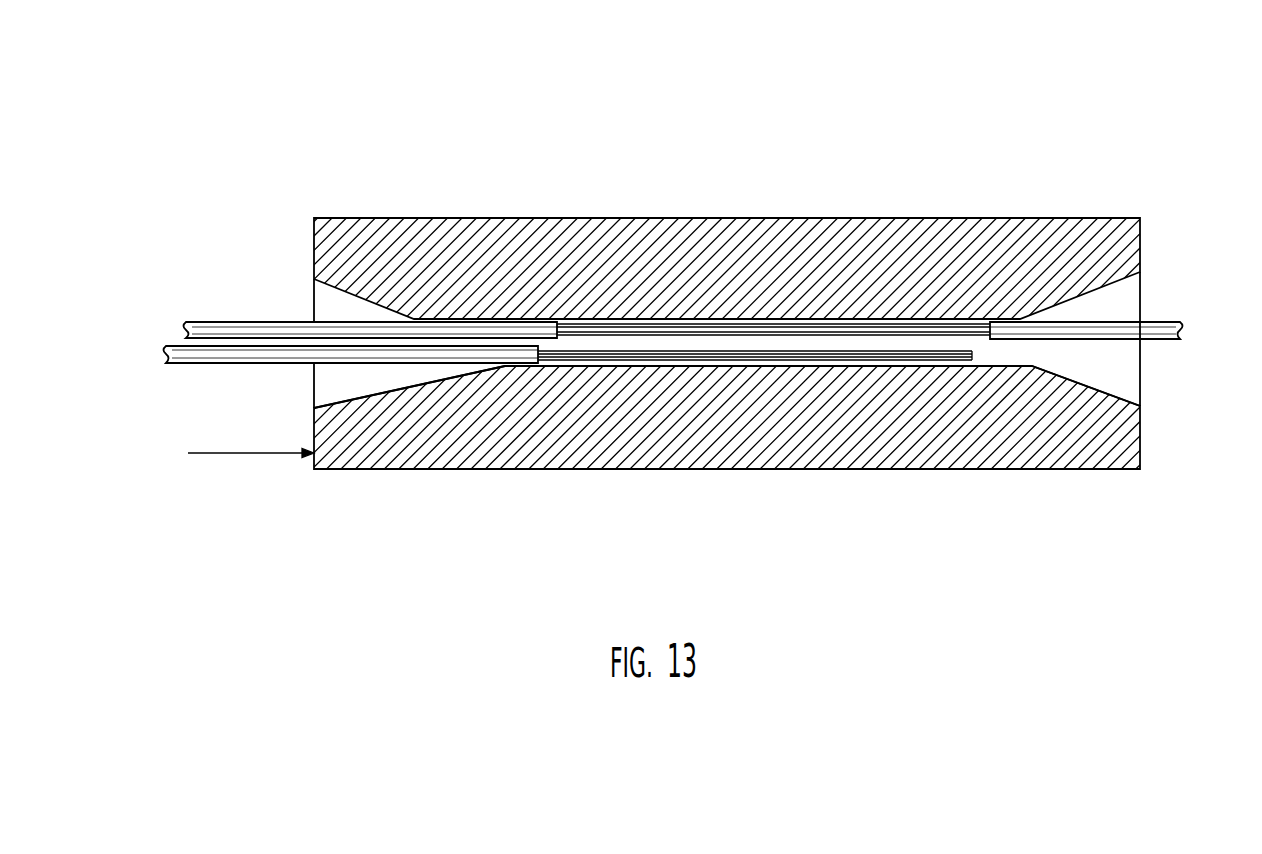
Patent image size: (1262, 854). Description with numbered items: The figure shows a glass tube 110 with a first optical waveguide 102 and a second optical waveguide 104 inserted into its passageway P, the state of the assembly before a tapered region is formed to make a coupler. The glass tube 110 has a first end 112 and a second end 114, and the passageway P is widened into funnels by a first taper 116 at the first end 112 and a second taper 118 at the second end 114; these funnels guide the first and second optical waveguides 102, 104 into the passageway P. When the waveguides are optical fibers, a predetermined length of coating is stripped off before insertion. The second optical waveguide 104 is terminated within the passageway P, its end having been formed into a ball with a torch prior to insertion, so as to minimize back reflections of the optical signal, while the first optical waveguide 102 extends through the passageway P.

The first optical waveguide 102 is at (1150, 325).
The second optical waveguide 104 is at (1004, 355).
The glass tube 110 is at (665, 318).
The first end 112 is at (1156, 476).
The second end 114 is at (245, 453).
The first taper 116 is at (1132, 383).
The second taper 118 is at (299, 394).
The passageway P is at (591, 352).